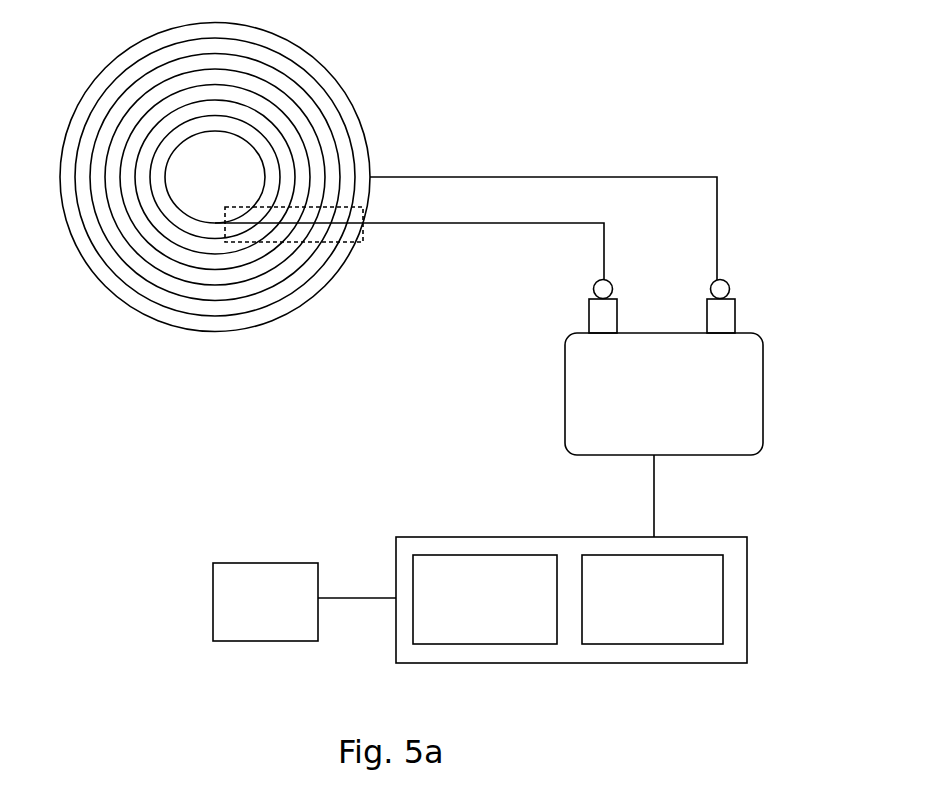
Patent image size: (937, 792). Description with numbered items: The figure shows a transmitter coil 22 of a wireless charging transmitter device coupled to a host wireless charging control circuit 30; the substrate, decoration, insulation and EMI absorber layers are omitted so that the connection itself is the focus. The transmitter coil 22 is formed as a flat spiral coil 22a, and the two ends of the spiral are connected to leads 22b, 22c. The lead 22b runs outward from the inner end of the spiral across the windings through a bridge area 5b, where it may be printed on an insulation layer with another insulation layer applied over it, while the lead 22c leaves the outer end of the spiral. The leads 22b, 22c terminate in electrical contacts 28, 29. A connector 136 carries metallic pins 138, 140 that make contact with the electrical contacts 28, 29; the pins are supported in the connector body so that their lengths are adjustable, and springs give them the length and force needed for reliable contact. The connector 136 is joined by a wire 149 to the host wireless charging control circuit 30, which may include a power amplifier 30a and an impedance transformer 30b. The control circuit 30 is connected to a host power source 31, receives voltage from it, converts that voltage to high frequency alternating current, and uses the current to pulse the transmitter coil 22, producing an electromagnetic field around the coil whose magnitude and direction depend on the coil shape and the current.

The transmitter coil 22 is at (201, 190).
The flat spiral coil 22a is at (120, 300).
The lead 22b is at (450, 224).
The lead 22c is at (516, 176).
The bridge area 5b is at (352, 242).
The electrical contact 28 is at (595, 285).
The electrical contact 29 is at (729, 285).
The metallic pin 138 is at (595, 327).
The metallic pin 140 is at (727, 323).
The connector 136 is at (763, 400).
The wire 149 is at (656, 512).
The host wireless charging control circuit 30 is at (571, 637).
The power amplifier 30a is at (481, 627).
The impedance transformer 30b is at (650, 627).
The host power source 31 is at (260, 641).